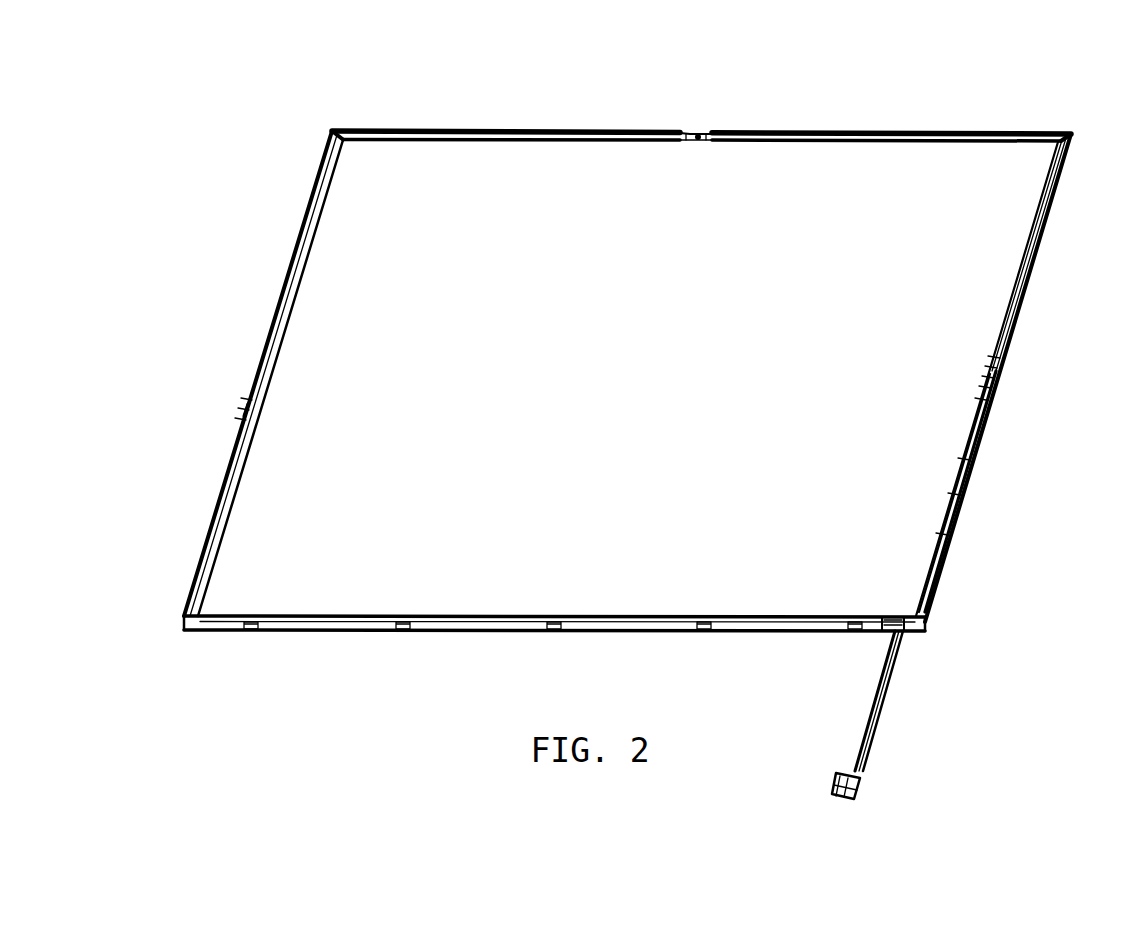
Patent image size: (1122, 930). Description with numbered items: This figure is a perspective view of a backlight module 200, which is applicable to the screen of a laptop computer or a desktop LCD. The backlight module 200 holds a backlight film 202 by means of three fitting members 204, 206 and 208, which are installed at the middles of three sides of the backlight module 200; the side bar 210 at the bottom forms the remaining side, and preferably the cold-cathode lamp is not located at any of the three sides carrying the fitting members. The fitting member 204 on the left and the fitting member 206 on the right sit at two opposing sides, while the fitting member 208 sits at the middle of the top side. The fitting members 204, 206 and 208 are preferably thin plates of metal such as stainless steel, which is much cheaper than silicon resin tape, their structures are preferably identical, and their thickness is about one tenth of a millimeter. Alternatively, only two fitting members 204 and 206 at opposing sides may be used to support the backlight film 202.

The backlight module 200 is at (408, 93).
The backlight film 202 is at (597, 161).
The fitting member 204 is at (250, 407).
The fitting member 206 is at (995, 398).
The fitting member 208 is at (699, 133).
The bottom frame bar with cable 210 is at (289, 630).